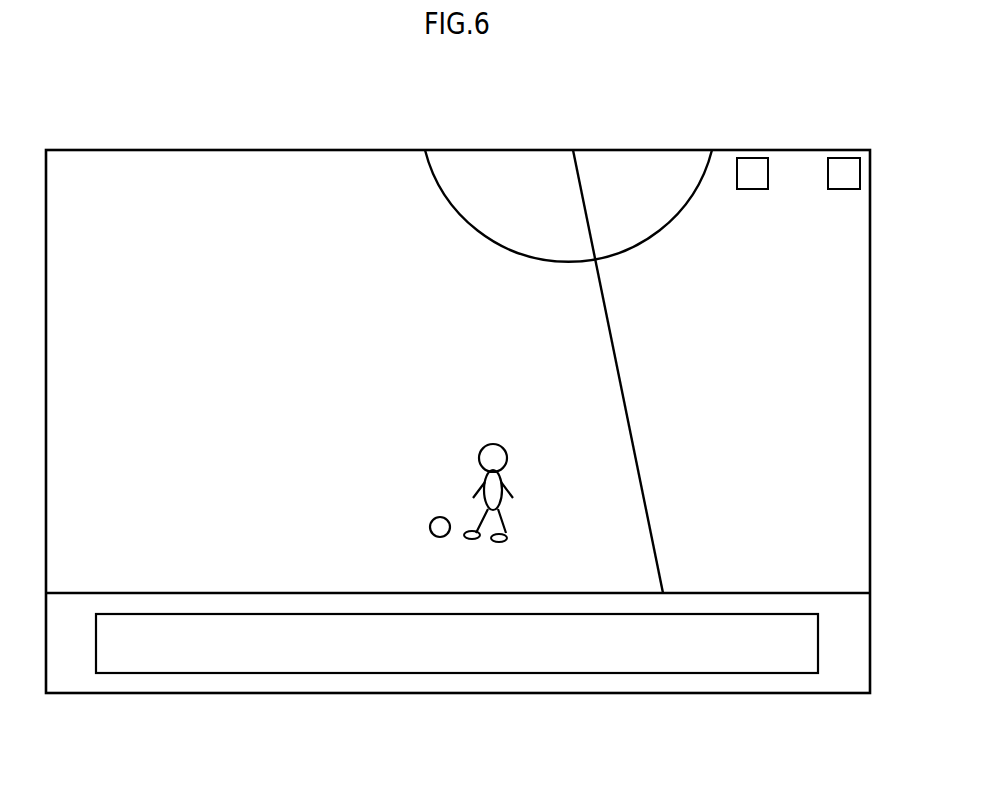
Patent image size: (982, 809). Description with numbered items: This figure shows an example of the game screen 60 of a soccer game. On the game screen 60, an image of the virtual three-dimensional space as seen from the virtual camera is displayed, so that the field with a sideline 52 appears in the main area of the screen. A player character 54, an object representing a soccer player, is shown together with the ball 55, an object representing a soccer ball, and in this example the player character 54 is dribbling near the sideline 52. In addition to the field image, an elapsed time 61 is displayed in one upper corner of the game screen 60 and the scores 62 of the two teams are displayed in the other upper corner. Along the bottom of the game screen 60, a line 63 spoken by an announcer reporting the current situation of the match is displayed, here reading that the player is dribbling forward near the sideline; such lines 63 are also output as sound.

The sideline 52 is at (745, 592).
The player character 54 is at (492, 442).
The ball 55 is at (428, 524).
The game screen 60 is at (402, 693).
The elapsed time 61 is at (102, 145).
The scores 62 is at (797, 145).
The line 63 is at (187, 673).